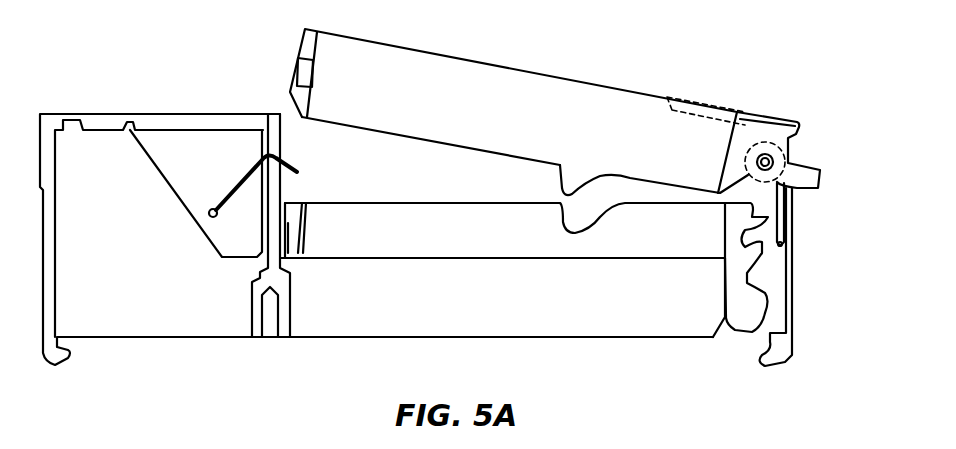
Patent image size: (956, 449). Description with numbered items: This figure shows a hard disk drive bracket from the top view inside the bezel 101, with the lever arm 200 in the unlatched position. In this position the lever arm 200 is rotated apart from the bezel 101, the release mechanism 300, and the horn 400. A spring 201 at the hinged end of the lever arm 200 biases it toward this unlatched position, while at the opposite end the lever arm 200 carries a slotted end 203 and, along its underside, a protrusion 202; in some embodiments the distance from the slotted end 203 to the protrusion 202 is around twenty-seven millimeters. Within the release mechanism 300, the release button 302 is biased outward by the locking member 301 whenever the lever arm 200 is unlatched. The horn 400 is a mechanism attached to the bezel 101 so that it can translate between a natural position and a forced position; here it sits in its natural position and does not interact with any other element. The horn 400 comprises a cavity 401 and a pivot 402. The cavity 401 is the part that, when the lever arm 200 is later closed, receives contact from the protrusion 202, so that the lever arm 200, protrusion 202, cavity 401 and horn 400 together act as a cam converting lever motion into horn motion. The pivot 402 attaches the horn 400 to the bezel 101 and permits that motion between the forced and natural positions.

The bezel 101 is at (390, 320).
The lever arm 200 is at (567, 87).
The spring 201 is at (720, 104).
The protrusion 202 is at (557, 190).
The slotted end 203 is at (300, 76).
The release mechanism 300 is at (208, 112).
The locking member 301 is at (300, 170).
The release button 302 is at (192, 152).
The horn 400 is at (613, 250).
The cavity 401 is at (577, 226).
The pivot 402 is at (753, 310).